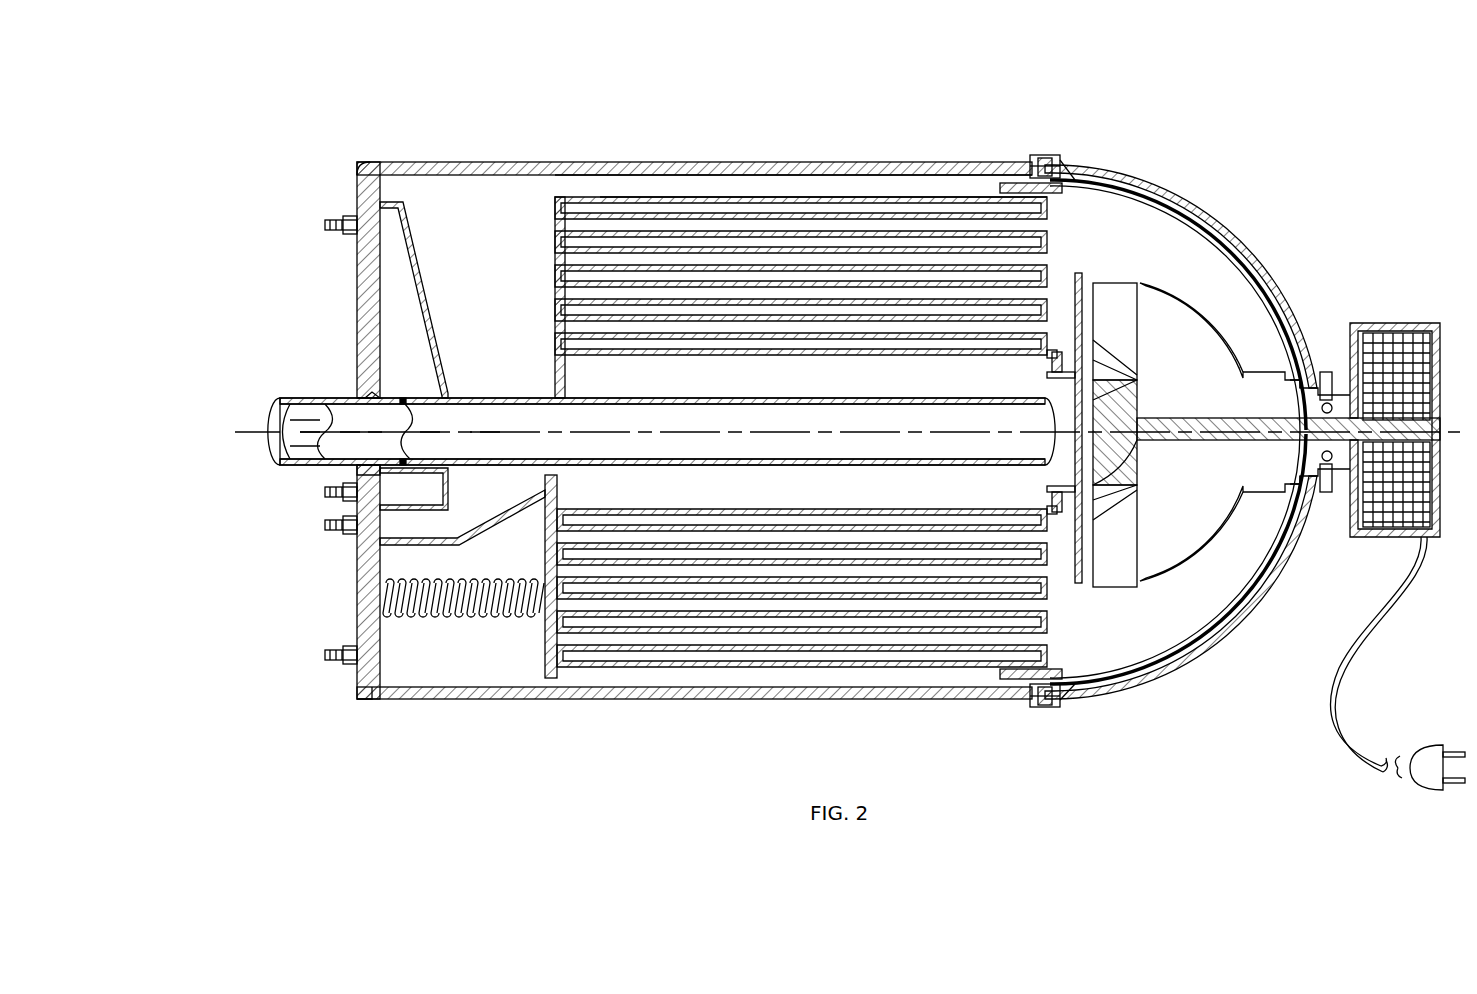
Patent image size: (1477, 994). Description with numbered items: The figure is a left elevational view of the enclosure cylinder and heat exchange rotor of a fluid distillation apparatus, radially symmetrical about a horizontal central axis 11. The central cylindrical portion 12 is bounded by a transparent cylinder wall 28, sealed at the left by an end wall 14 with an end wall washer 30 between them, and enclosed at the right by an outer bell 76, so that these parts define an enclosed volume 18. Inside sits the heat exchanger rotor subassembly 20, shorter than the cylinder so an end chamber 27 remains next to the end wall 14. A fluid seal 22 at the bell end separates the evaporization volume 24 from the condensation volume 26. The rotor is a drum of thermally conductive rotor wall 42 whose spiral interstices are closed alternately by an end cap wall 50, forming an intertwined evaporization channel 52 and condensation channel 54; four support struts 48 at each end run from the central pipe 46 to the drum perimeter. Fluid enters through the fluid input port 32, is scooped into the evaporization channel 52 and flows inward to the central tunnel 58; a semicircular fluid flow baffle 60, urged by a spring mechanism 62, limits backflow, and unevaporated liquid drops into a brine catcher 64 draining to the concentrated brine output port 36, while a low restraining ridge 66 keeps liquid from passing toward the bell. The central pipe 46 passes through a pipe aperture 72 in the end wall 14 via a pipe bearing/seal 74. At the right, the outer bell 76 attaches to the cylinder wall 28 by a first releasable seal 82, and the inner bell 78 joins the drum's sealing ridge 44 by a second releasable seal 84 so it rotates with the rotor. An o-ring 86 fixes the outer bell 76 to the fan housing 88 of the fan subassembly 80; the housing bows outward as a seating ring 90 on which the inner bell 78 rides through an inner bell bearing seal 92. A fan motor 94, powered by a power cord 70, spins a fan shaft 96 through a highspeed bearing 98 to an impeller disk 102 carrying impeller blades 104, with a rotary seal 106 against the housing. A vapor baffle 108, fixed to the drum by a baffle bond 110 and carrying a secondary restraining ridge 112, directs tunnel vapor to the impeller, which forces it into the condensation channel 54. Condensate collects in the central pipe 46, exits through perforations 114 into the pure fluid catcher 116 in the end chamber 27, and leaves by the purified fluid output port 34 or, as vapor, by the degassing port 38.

The central axis 11 is at (248, 432).
The central cylindrical portion 12 is at (835, 150).
The end wall 14 is at (357, 280).
The enclosed volume 18 is at (660, 190).
The heat exchanger rotor subassembly 20 is at (738, 222).
The fluid seal 22 is at (1050, 175).
The evaporization volume 24 is at (500, 205).
The condensation volume 26 is at (1180, 275).
The end chamber 27 is at (462, 665).
The cylinder wall 28 is at (575, 162).
The end wall washer 30 is at (368, 162).
The fluid input port 32 is at (342, 655).
The purified fluid output port 34 is at (342, 494).
The concentrated brine output port 36 is at (342, 528).
The degassing port 38 is at (340, 218).
The rotor wall 42 is at (870, 667).
The sealing ridge 44 is at (1015, 183).
The central pipe 46 is at (620, 412).
The support struts 48 is at (555, 345).
The end cap wall 50 is at (555, 270).
The evaporization channel 52 is at (880, 245).
The condensation channel 54 is at (935, 280).
The central tunnel 58 is at (751, 505).
The fluid flow baffle 60 is at (545, 640).
The spring mechanism 62 is at (460, 585).
The brine catcher 64 is at (462, 540).
The restraining ridge 66 is at (1047, 356).
The power cord 70 is at (1340, 760).
The pipe aperture 72 is at (360, 398).
The pipe bearing/seal 74 is at (357, 470).
The outer bell 76 is at (1110, 168).
The inner bell 78 is at (1230, 290).
The fan subassembly 80 is at (1395, 270).
The first releasable seal 82 is at (1042, 158).
The second releasable seal 84 is at (1070, 178).
The o-ring 86 is at (1326, 372).
The fan housing 88 is at (1432, 322).
The seating ring 90 is at (1292, 393).
The inner bell bearing seal 92 is at (1275, 375).
The fan motor 94 is at (1410, 385).
The fan shaft 96 is at (1185, 420).
The highspeed bearing 98 is at (1330, 404).
The impeller disk 102 is at (1140, 522).
The impeller blades 104 is at (1150, 245).
The rotary seal 106 is at (1200, 218).
The vapor baffle 108 is at (1115, 283).
The baffle bond 110 is at (1078, 273).
The secondary restraining ridge 112 is at (1052, 385).
The perforations 114 is at (405, 398).
The pure fluid catcher 116 is at (425, 262).